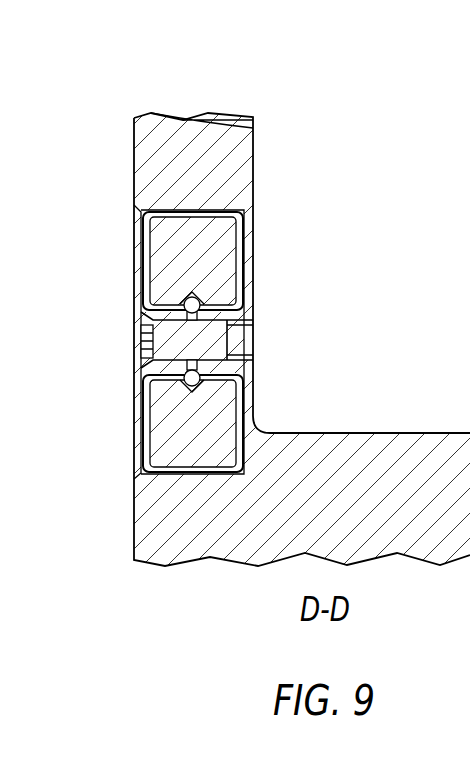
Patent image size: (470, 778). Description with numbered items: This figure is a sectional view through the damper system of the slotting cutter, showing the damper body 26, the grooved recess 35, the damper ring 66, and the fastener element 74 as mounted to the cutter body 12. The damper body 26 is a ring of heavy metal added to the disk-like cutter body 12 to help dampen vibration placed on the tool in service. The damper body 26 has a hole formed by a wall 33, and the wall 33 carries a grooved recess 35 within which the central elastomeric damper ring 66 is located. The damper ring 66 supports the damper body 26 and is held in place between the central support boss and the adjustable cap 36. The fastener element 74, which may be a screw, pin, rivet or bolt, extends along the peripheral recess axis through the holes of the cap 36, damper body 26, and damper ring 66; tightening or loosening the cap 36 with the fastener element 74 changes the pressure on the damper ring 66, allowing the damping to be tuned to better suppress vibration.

The cutter body 12 is at (134, 140).
The damper body 26 is at (205, 212).
The wall 33 is at (153, 325).
The grooved recess 35 is at (192, 388).
The cap 36 is at (134, 270).
The damper ring 66 is at (192, 305).
The fastener element 74 is at (133, 347).